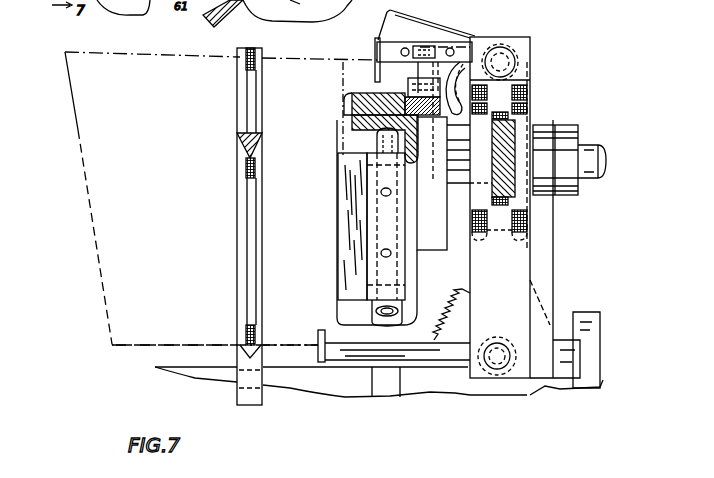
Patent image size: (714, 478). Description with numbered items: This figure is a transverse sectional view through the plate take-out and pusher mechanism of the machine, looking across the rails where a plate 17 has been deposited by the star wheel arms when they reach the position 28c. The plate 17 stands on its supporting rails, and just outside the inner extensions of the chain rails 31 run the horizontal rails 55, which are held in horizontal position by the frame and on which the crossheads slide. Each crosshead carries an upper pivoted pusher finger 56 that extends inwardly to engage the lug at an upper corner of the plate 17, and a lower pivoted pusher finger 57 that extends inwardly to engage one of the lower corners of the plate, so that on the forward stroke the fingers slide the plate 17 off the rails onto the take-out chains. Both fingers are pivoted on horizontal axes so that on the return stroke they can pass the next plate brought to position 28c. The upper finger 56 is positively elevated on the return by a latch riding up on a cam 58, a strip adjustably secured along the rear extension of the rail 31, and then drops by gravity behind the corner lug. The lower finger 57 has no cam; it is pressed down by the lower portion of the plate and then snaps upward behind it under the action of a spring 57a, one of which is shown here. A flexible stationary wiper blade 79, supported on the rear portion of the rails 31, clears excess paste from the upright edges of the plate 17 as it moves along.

The plate 17 is at (113, 352).
The star wheel arm position 28c is at (262, 93).
The chain rails 31 is at (368, 123).
The horizontal rails 55 is at (513, 138).
The upper pivoted pusher finger 56 is at (440, 50).
The lower pivoted pusher finger 57 is at (440, 368).
The spring 57a is at (448, 313).
The cam 58 is at (437, 164).
The flexible stationary wiper blade 79 is at (343, 230).